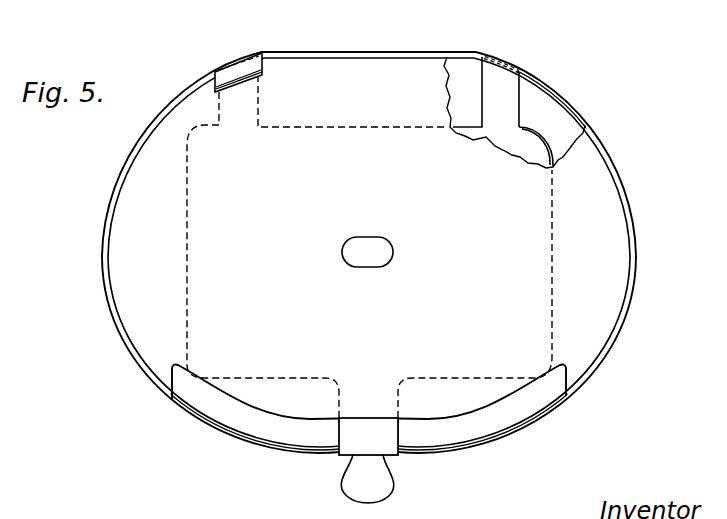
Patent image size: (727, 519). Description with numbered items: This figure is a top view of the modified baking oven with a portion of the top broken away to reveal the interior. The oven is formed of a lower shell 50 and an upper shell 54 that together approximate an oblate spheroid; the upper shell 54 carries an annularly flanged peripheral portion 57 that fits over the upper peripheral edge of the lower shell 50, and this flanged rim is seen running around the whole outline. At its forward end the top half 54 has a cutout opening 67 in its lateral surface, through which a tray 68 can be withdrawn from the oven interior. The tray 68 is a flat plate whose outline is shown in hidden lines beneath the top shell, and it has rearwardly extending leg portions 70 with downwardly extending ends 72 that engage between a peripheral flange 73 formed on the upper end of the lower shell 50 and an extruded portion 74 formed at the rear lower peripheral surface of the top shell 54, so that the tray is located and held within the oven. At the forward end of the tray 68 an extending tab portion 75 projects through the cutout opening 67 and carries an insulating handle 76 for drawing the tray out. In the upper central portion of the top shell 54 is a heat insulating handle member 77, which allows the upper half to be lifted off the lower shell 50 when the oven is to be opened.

The lower shell 50 is at (555, 405).
The upper shell 54 is at (610, 208).
The annularly flanged peripheral portion 57 is at (636, 282).
The cutout opening 67 is at (190, 405).
The tray 68 is at (192, 279).
The leg portions 70 is at (248, 101).
The downwardly extending ends 72 is at (497, 63).
The peripheral flange 73 is at (541, 81).
The extruded portion 74 is at (280, 46).
The tab portion 75 is at (342, 453).
The insulating handle 76 is at (385, 479).
The heat insulating handle member 77 is at (356, 256).